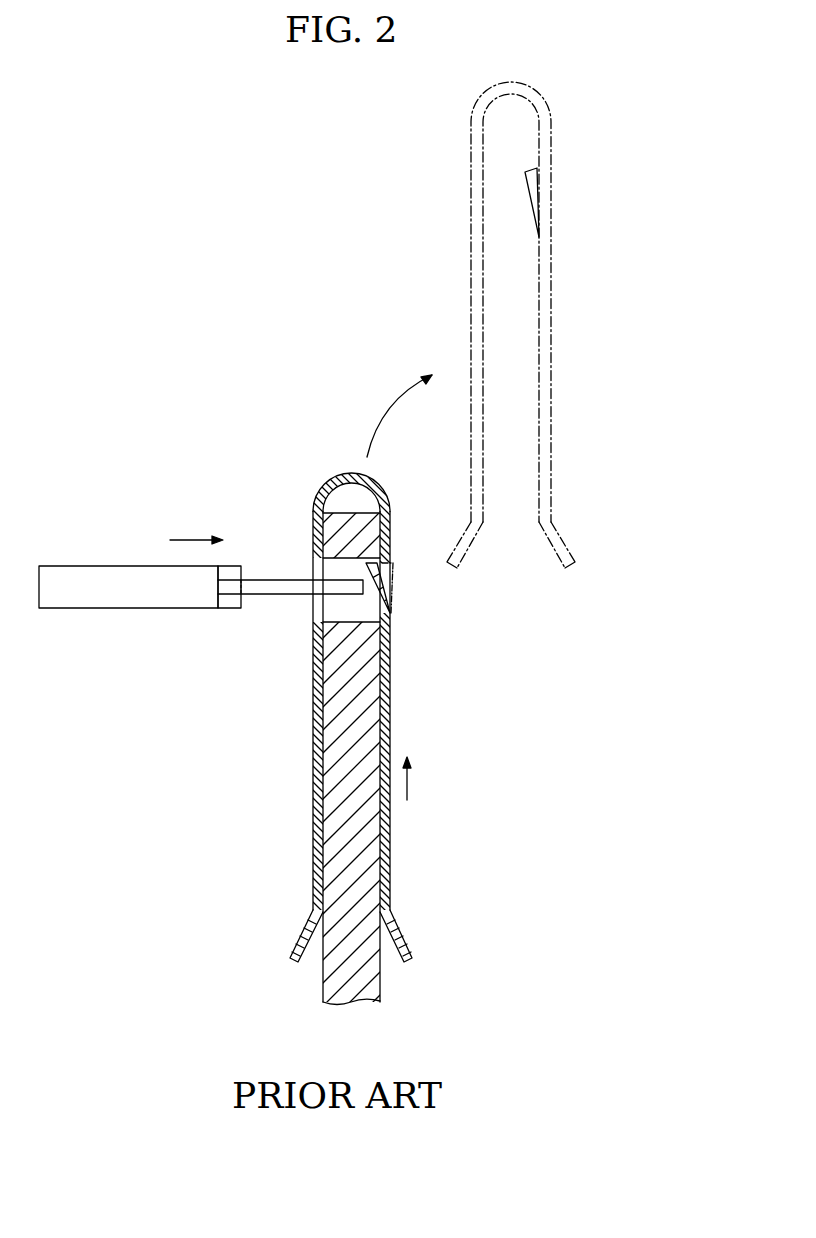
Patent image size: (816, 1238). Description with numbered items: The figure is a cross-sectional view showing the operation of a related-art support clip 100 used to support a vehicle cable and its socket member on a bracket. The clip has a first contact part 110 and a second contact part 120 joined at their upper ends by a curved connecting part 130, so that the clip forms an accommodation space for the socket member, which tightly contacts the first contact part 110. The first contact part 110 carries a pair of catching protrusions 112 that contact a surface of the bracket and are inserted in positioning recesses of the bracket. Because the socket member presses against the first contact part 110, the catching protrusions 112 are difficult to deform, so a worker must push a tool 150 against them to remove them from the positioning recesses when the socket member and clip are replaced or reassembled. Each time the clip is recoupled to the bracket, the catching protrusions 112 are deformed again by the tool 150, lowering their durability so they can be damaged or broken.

The clip 100 is at (557, 113).
The first contact part 110 is at (390, 708).
The catching protrusions 112 is at (385, 598).
The second contact part 120 is at (313, 781).
The connecting part 130 is at (328, 478).
The tool 150 is at (109, 573).